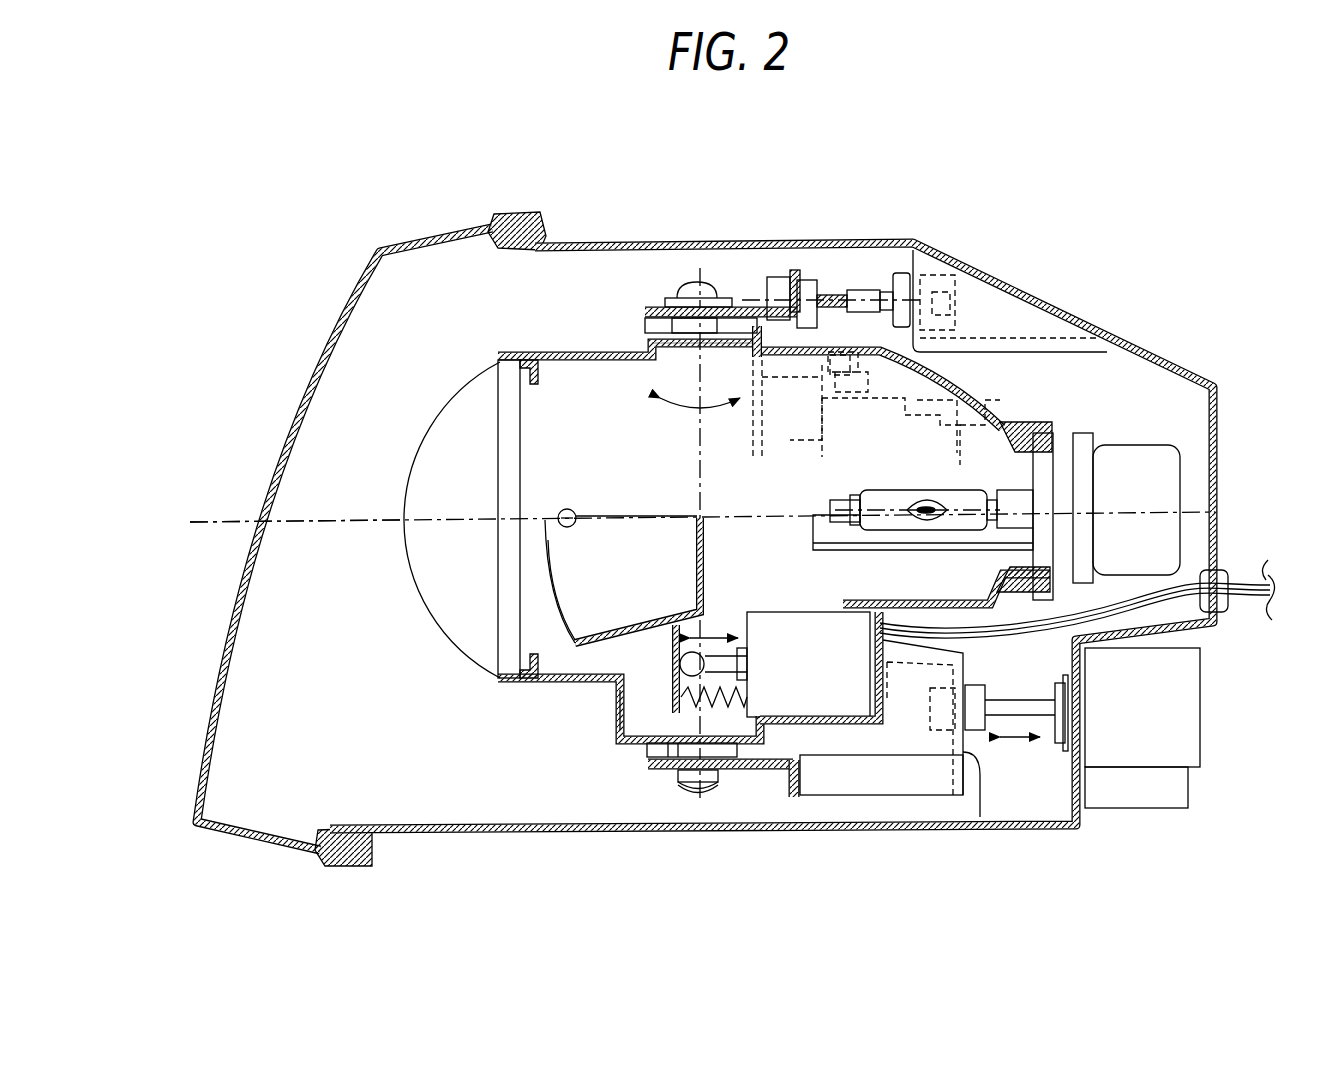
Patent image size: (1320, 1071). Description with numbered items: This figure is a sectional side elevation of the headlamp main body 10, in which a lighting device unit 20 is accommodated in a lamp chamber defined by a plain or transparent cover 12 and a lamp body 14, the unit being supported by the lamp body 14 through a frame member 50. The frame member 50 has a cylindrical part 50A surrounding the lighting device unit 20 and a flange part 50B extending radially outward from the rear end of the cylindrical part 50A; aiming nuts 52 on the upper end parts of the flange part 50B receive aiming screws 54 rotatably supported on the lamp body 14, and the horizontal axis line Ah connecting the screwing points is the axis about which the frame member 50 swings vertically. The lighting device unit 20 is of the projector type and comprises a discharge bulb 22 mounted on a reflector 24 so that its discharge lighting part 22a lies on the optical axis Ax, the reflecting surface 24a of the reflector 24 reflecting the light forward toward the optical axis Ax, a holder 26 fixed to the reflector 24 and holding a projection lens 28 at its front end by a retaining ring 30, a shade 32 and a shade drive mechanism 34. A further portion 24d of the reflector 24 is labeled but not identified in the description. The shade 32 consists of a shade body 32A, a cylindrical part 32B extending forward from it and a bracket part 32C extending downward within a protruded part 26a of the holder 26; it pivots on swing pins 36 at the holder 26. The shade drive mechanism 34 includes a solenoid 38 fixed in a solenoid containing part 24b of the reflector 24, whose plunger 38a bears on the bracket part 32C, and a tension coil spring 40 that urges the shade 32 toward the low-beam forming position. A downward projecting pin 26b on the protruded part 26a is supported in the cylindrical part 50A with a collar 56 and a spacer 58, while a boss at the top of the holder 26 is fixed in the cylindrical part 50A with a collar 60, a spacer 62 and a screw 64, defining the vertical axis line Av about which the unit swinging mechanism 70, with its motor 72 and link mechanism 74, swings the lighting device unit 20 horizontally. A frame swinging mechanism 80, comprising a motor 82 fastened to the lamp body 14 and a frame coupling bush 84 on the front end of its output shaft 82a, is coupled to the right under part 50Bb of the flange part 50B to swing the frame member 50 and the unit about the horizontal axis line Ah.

The headlamp main body 10 is at (372, 186).
The plain or transparent cover 12 is at (320, 357).
The lamp body 14 is at (1036, 283).
The lighting device unit 20 is at (523, 318).
The discharge bulb 22 is at (862, 497).
The discharge lighting part 22a is at (925, 523).
The reflector 24 is at (1046, 422).
The reflecting surface 24a is at (990, 430).
The solenoid containing part 24b is at (830, 722).
The holder opening 24d is at (822, 440).
The holder 26 is at (585, 352).
The protruded part 26a is at (616, 712).
The downward projecting pin 26b is at (693, 793).
The projection lens 28 is at (440, 412).
The retaining ring 30 is at (498, 352).
The shade 32 is at (625, 508).
The shade body 32A is at (697, 538).
The cylindrical part 32B is at (640, 625).
The bracket part 32C is at (668, 705).
The shade drive mechanism 34 is at (770, 605).
The swing pin 36 is at (567, 508).
The solenoid 38 is at (820, 640).
The plunger 38a is at (712, 652).
The tension coil spring 40 is at (748, 690).
The frame member 50 is at (654, 300).
The cylindrical part 50A is at (765, 772).
The flange part 50B is at (800, 783).
The right under part 50Bb is at (978, 812).
The aiming nut 52 is at (775, 276).
The aiming screw 54 is at (848, 292).
The collar 56 is at (672, 777).
The spacer 58 is at (645, 748).
The collar 60 is at (670, 305).
The spacer 62 is at (652, 338).
The screw 64 is at (717, 283).
The unit swinging mechanism 70 is at (912, 384).
The motor 72 is at (985, 405).
The link mechanism 74 is at (840, 350).
The frame swinging mechanism 80 is at (1210, 740).
The motor 82 is at (1170, 692).
The output shaft 82a is at (1020, 718).
The frame coupling bush 84 is at (975, 698).
The optical axis Ax is at (365, 524).
The horizontal axis line Ah is at (806, 270).
The vertical axis line Av is at (690, 425).